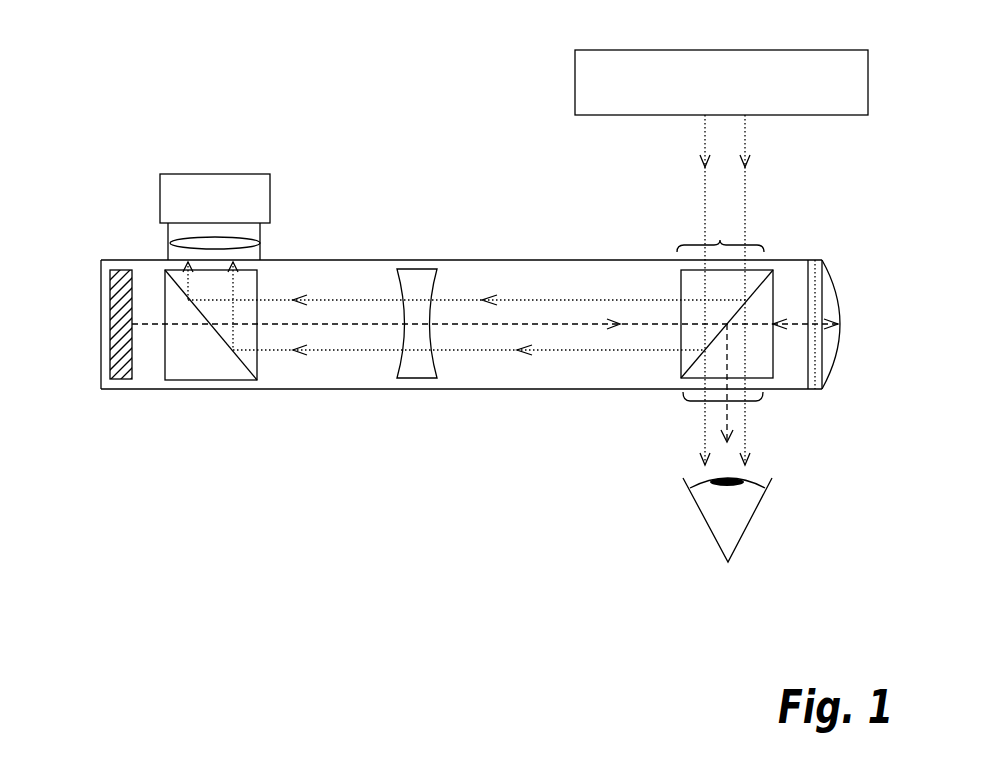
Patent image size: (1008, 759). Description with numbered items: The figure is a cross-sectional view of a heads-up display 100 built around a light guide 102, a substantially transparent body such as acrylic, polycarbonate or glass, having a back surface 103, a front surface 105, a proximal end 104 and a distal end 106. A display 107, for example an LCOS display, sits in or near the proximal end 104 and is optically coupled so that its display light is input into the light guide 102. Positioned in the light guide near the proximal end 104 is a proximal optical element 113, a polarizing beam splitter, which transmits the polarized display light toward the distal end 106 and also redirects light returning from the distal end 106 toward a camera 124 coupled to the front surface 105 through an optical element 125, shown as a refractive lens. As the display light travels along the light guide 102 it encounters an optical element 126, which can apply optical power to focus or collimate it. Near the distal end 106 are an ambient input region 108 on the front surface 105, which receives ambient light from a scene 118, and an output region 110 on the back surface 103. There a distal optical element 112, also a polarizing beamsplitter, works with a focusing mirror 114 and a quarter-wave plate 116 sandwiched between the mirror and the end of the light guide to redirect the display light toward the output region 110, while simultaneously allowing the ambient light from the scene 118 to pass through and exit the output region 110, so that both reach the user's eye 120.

The heads-up display 100 is at (268, 130).
The light guide 102 is at (467, 373).
The back surface 103 is at (540, 390).
The proximal end 104 is at (89, 254).
The front surface 105 is at (333, 259).
The distal end 106 is at (903, 380).
The display 107 is at (117, 373).
The ambient input region 108 is at (712, 238).
The output region 110 is at (757, 401).
The distal optical element 112 is at (690, 278).
The proximal optical element 113 is at (258, 365).
The focusing mirror 114 is at (830, 306).
The quarter-wave plate 116 is at (813, 263).
The scene 118 is at (721, 82).
The eye 120 is at (733, 525).
The camera 124 is at (215, 217).
The optical element 125 is at (175, 245).
The optical element 126 is at (415, 273).